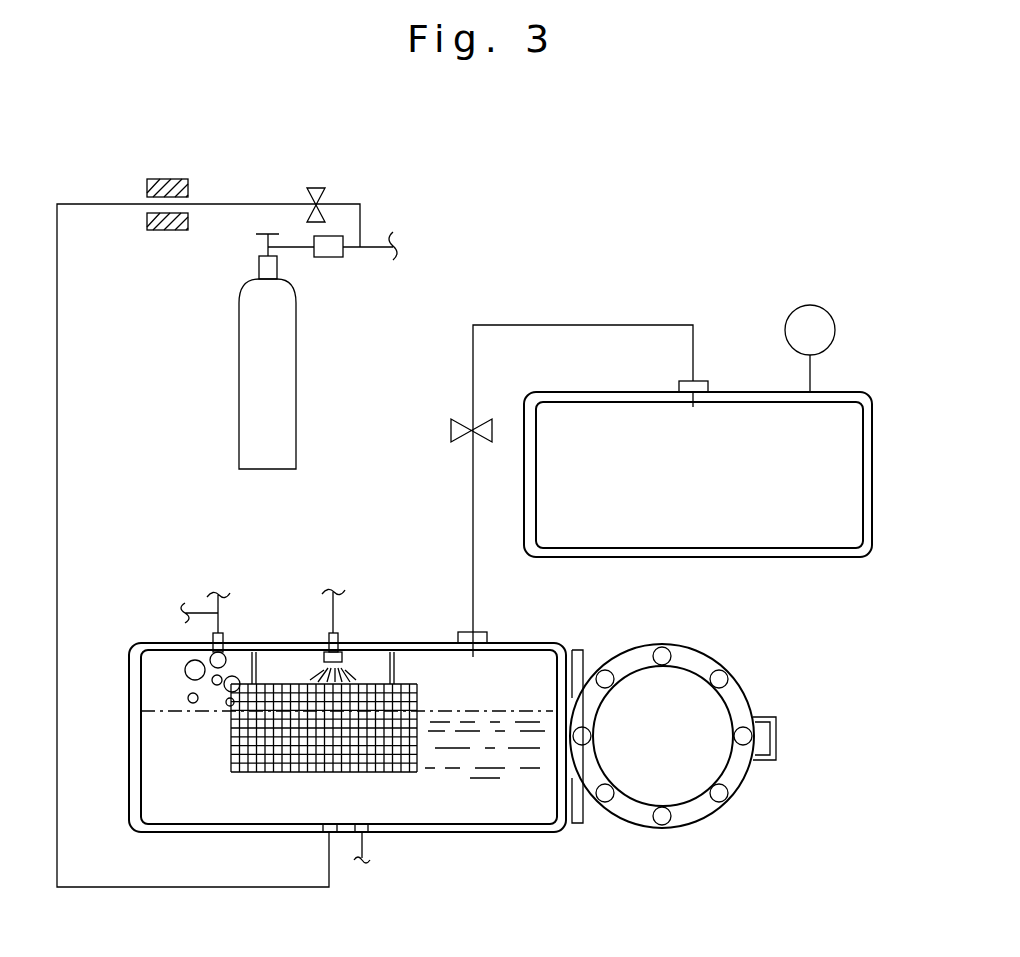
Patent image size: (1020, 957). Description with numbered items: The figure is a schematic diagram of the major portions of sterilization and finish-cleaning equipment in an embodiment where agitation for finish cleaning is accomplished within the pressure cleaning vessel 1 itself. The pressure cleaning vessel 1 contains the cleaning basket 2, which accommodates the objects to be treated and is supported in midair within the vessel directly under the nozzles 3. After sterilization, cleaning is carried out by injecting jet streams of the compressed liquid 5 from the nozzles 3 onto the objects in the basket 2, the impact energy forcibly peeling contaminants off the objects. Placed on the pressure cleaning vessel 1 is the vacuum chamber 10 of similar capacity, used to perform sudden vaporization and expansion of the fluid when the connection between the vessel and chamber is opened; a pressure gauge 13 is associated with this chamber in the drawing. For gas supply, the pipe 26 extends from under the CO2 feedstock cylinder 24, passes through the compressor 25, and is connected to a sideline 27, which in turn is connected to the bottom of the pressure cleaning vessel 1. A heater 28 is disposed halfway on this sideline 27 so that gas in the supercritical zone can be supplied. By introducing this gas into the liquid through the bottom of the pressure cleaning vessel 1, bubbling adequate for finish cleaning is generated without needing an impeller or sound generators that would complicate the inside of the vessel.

The pressure cleaning vessel 1 is at (167, 833).
The cleaning basket 2 is at (370, 772).
The nozzles 3 is at (393, 630).
The compressed liquid 5 is at (160, 733).
The vacuum chamber 10 is at (818, 557).
The pressure gauge 13 is at (810, 304).
The CO2 feedstock cylinder 24 is at (273, 469).
The compressor 25 is at (333, 257).
The pipe 26 is at (305, 248).
The sideline 27 is at (57, 568).
The heater 28 is at (161, 232).